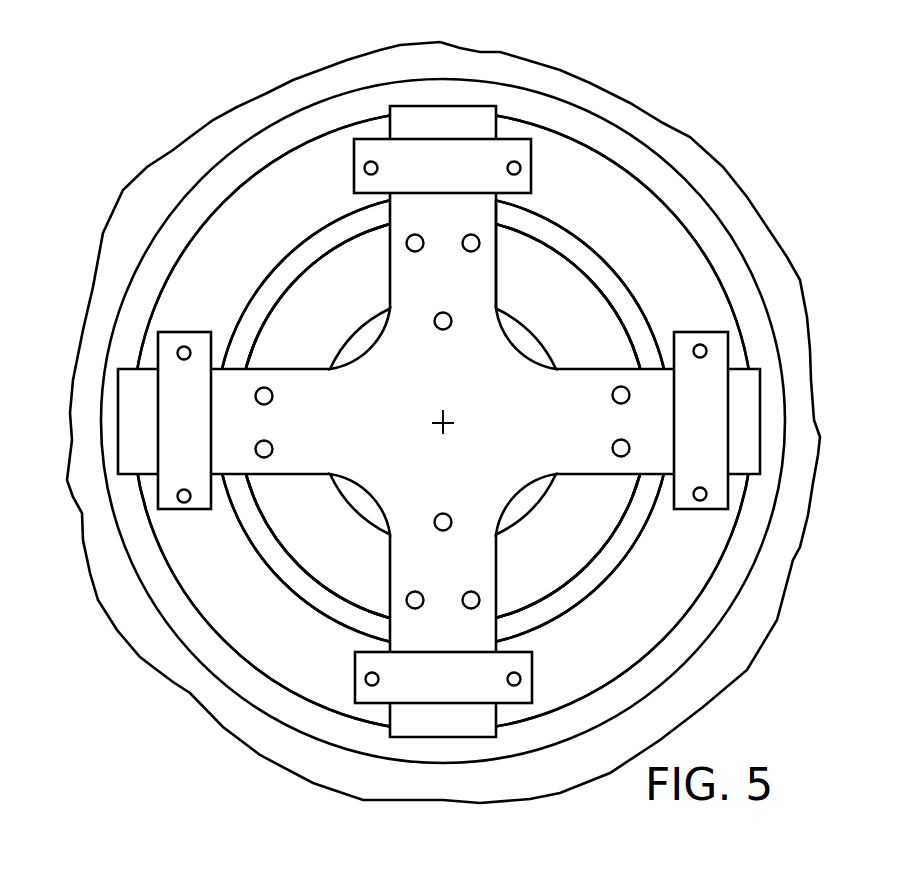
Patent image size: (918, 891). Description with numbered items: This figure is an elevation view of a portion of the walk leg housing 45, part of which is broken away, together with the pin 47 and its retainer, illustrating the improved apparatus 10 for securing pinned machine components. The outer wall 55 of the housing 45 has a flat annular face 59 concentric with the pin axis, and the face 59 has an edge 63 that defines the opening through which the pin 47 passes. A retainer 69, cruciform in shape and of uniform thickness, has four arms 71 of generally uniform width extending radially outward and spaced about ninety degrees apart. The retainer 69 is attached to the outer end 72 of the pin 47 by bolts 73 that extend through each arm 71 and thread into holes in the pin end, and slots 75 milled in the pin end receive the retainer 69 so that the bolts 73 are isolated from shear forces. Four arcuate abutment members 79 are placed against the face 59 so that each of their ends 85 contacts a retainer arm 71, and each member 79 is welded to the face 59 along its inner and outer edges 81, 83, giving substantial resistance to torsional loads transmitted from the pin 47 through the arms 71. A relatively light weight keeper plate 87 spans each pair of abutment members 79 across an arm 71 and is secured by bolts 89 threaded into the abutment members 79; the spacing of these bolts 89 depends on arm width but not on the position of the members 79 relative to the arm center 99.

The apparatus 10 is at (230, 87).
The housing 45 is at (157, 667).
The pin 47 is at (577, 526).
The outer wall 55 is at (340, 75).
The annular face 59 is at (602, 137).
The edge 63 is at (595, 280).
The retainer 69 is at (360, 512).
The arms 71 is at (132, 445).
The outer end of pin 72 is at (538, 563).
The bolts 73 is at (421, 252).
The slots 75 is at (497, 273).
The abutment members 79 is at (218, 267).
The inner member edge 81 is at (258, 285).
The outer member edge 83 is at (223, 200).
The ends of abutment member 85 is at (377, 127).
The keeper plate 87 is at (177, 475).
The bolts 89 is at (707, 344).
The arm center 99 is at (437, 424).